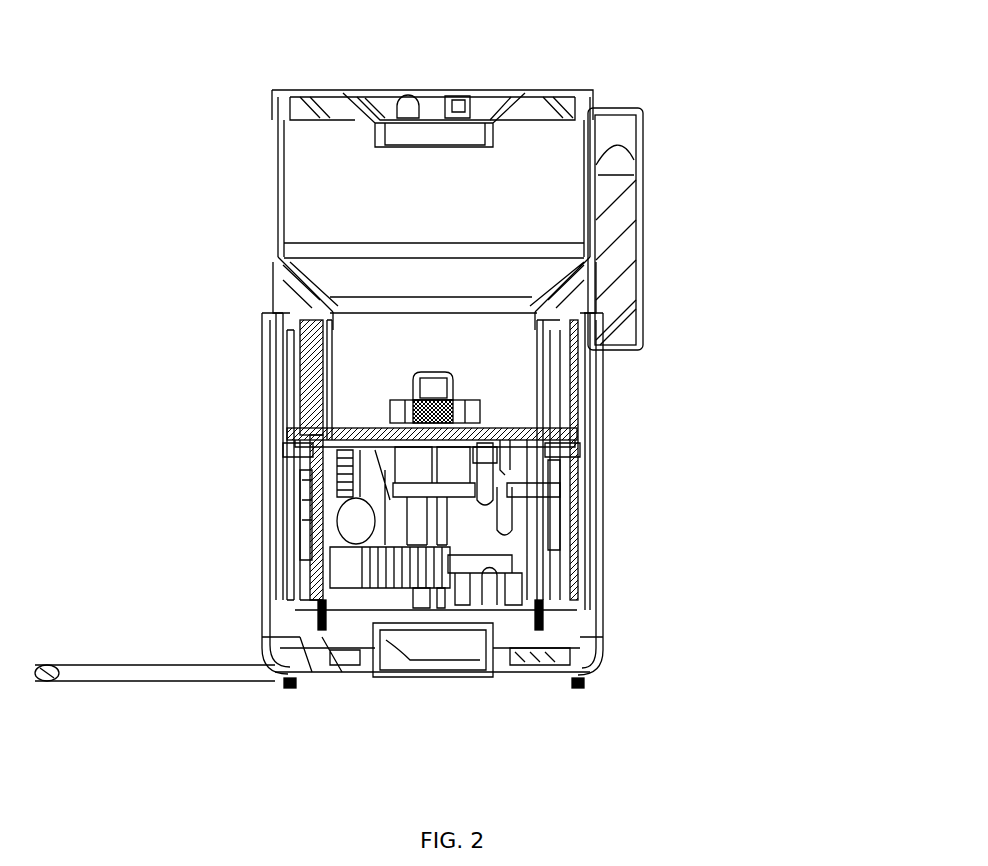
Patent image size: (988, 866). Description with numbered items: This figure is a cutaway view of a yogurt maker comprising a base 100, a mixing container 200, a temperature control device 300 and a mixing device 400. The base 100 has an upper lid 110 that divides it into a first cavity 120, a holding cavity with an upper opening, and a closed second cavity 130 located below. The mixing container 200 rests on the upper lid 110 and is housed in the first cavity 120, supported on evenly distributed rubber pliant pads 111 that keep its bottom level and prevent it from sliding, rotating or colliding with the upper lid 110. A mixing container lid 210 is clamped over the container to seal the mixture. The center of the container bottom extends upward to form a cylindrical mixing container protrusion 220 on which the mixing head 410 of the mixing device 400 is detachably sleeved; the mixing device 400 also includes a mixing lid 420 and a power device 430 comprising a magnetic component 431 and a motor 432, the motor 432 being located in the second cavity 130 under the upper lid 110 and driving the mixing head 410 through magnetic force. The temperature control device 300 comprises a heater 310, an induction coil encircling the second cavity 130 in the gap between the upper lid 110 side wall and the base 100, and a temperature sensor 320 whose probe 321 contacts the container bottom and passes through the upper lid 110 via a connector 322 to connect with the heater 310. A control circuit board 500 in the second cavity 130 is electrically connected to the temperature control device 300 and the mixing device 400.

The base 100 is at (227, 493).
The upper lid 110 is at (305, 460).
The pliant pads 111 is at (345, 492).
The first cavity 120 is at (300, 348).
The second cavity 130 is at (302, 422).
The mixing container 200 is at (320, 193).
The mixing container lid 210 is at (312, 100).
The mixing container protrusion 220 is at (415, 378).
The temperature control device 300 is at (668, 494).
The heater 310 is at (555, 383).
The temperature sensor 320 is at (629, 471).
The probe 321 is at (553, 457).
The connector 322 is at (505, 466).
The mixing device 400 is at (595, 346).
The mixing head 410 is at (455, 393).
The mixing lid 420 is at (437, 372).
The power device 430 is at (616, 369).
The magnetic component 431 is at (497, 423).
The motor 432 is at (520, 330).
The control circuit board 500 is at (375, 610).